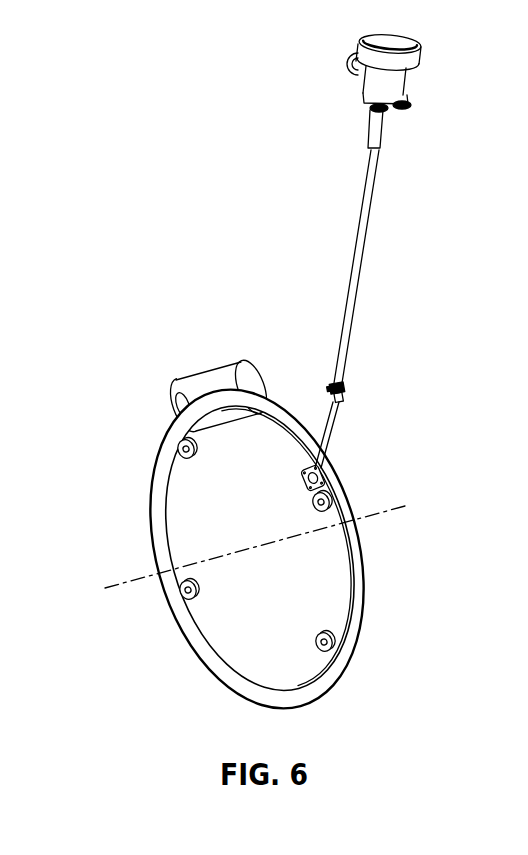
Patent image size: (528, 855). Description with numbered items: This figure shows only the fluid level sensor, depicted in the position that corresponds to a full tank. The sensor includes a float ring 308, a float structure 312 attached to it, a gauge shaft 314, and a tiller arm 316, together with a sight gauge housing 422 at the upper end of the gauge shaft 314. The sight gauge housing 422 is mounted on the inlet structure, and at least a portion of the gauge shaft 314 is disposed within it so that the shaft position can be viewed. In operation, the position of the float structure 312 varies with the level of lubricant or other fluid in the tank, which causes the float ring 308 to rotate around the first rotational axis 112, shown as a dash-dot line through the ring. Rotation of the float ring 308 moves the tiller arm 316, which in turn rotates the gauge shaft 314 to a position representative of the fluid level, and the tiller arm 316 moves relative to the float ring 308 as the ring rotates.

The first rotational axis 112 is at (119, 583).
The float ring 308 is at (276, 410).
The float structure 312 is at (213, 370).
The gauge shaft 314 is at (361, 263).
The tiller arm 316 is at (333, 423).
The sight gauge housing 422 is at (420, 52).